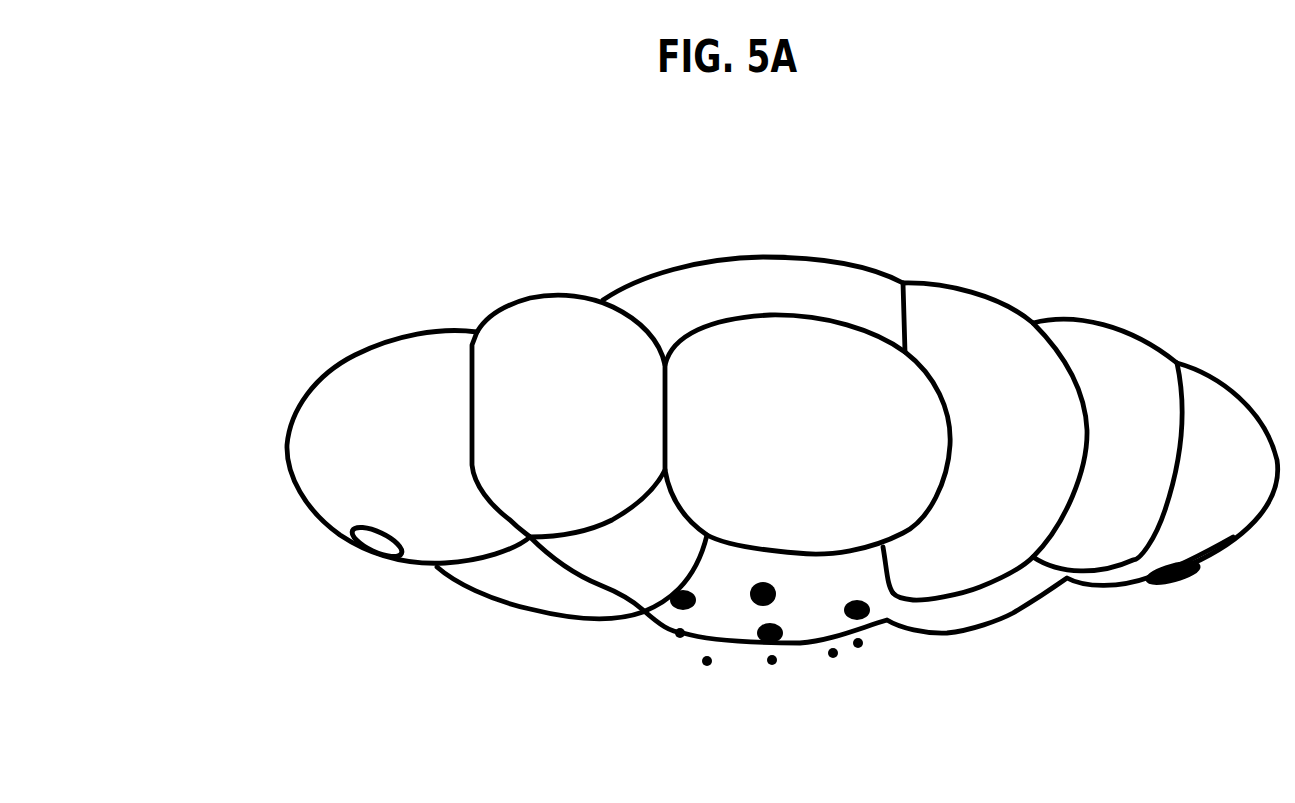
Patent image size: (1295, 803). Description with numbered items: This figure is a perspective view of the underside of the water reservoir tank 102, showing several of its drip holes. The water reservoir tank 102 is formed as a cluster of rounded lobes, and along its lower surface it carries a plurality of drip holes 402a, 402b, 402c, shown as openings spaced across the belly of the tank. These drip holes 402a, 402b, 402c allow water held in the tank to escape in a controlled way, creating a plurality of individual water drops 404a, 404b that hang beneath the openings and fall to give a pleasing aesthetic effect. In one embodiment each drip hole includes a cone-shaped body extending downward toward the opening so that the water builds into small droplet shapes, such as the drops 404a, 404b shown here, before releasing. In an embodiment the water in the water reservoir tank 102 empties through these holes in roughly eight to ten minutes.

The water reservoir tank 102 is at (208, 509).
The drip hole 402a is at (643, 610).
The drip hole 402b is at (772, 645).
The drip hole 402c is at (860, 618).
The individual water drop 404a is at (707, 661).
The individual water drop 404b is at (772, 660).